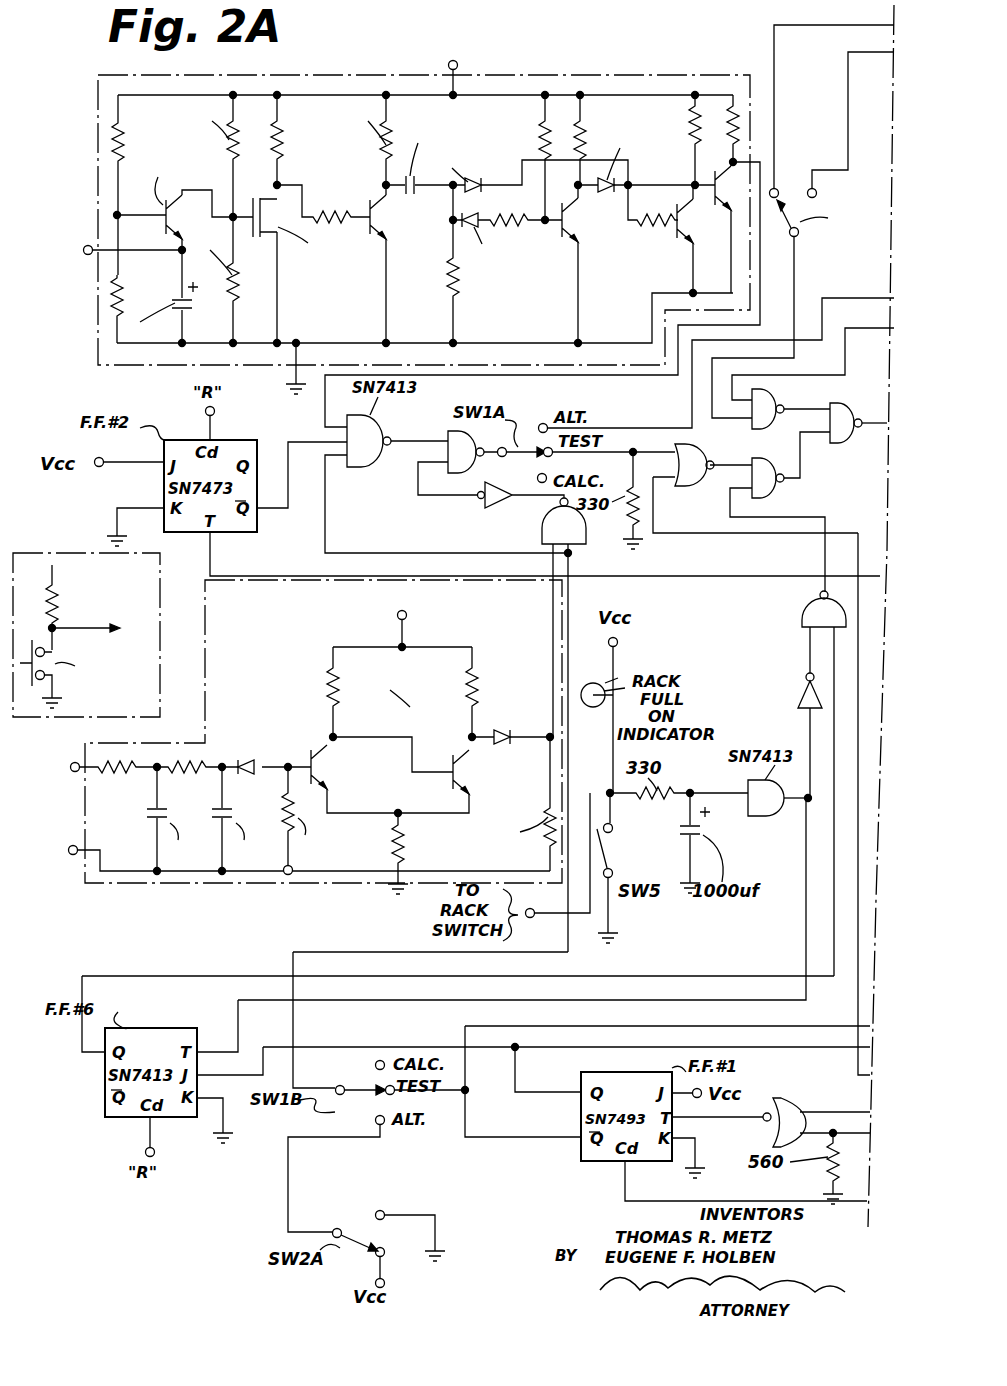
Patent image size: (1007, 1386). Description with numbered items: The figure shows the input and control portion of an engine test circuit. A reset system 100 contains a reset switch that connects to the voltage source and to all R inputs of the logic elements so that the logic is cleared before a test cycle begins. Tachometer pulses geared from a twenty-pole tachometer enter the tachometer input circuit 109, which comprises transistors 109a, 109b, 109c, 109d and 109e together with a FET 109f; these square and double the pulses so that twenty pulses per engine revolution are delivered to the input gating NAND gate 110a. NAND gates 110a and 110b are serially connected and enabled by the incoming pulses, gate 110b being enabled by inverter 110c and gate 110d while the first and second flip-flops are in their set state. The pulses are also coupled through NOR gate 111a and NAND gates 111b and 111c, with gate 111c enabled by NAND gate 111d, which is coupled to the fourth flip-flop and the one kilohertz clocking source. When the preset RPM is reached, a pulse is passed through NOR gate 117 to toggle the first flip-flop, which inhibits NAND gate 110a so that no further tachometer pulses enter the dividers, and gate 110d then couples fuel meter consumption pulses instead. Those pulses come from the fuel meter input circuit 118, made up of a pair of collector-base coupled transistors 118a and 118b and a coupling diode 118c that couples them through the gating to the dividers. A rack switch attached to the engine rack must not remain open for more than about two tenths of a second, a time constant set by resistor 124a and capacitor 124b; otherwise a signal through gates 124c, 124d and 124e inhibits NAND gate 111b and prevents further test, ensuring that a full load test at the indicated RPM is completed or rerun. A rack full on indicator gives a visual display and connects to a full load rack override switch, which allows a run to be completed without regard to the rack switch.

The reset system 100 is at (37, 553).
The tachometer input circuit 109 is at (98, 113).
The transistor 109a is at (165, 226).
The transistor 109b is at (368, 245).
The transistor 109c is at (570, 224).
The transistor 109d is at (675, 235).
The transistor 109e is at (713, 188).
The FET 109f is at (256, 205).
The input gating NAND gate 110a is at (368, 467).
The NAND gate 110b is at (448, 435).
The inverter 110c is at (490, 505).
The gate 110d is at (545, 538).
The NOR gate 111a is at (694, 490).
The NAND gate 111b is at (774, 493).
The NAND gate 111c is at (843, 443).
The NAND gate 111d is at (773, 400).
The NOR gate 117 is at (792, 1103).
The fuel meter input circuit 118 is at (205, 650).
The transistor 118a is at (309, 758).
The transistor 118b is at (450, 757).
The coupling diode 118c is at (501, 729).
The resistor 124a is at (668, 790).
The capacitor 124b is at (670, 830).
The gate 124c is at (775, 818).
The gate 124d is at (797, 692).
The gate 124e is at (803, 610).